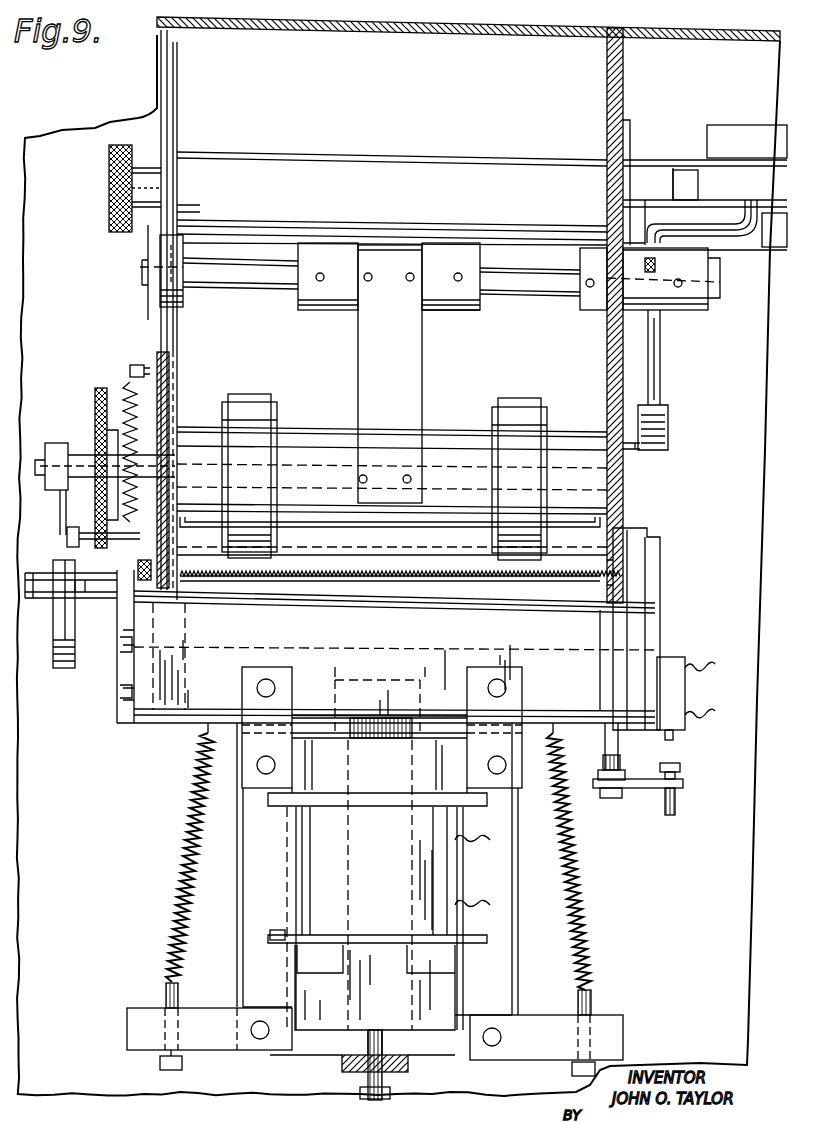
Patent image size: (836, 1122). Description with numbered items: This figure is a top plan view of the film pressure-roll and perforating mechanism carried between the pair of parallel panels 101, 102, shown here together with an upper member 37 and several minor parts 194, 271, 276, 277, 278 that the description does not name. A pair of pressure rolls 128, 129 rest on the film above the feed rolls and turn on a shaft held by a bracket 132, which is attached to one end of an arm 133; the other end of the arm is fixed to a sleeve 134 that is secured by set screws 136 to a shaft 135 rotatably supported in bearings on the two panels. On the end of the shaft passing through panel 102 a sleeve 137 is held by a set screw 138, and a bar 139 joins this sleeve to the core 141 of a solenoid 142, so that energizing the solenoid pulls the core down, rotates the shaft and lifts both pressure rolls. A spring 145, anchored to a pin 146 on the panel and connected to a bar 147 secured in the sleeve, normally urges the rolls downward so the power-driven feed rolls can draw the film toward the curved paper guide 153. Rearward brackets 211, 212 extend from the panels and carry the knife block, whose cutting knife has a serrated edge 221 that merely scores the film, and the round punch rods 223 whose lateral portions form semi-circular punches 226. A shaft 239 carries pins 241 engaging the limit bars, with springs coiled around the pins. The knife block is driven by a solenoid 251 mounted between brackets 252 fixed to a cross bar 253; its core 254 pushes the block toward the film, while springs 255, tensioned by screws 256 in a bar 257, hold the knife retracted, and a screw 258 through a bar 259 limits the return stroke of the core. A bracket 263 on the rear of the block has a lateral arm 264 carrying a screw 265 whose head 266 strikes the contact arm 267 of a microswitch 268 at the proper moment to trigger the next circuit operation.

The top frame bar 37 is at (422, 34).
The panel 101 is at (179, 66).
The panel 102 is at (605, 55).
The pressure roll 128 is at (252, 394).
The pressure roll 129 is at (535, 390).
The bracket 132 is at (312, 425).
The arm 133 is at (356, 345).
The sleeve 134 is at (478, 315).
The shaft 135 is at (520, 270).
The set screws 136 is at (300, 288).
The sleeve 137 is at (700, 310).
The set screw 138 is at (683, 283).
The bar 139 is at (720, 248).
The core 141 is at (702, 176).
The solenoid 142 is at (732, 128).
The spring 145 is at (670, 423).
The pin 146 is at (640, 452).
The bar 147 is at (663, 368).
The paper guide 153 is at (338, 536).
The rack 194 is at (95, 398).
The bracket 211 is at (118, 706).
The bracket 212 is at (660, 550).
The serrated edge 221 is at (378, 565).
The punch rods 223 is at (203, 702).
The semi-circular punches 226 is at (186, 581).
The shaft 239 is at (105, 600).
The pins 241 is at (137, 575).
The solenoid 251 is at (388, 861).
The brackets 252 is at (237, 942).
The cross bar 253 is at (140, 660).
The core 254 is at (395, 953).
The springs 255 is at (325, 670).
The screws 256 is at (165, 995).
The bar 257 is at (218, 1055).
The screw 258 is at (385, 1085).
The bar 259 is at (342, 1066).
The bracket 263 is at (622, 758).
The arm 264 is at (650, 790).
The screw 265 is at (678, 793).
The head 266 is at (682, 768).
The contact arm 267 is at (676, 737).
The microswitch 268 is at (680, 657).
The shaft 271 is at (98, 497).
The stop 276 is at (128, 386).
The spring 277 is at (128, 375).
The bracket 278 is at (145, 298).